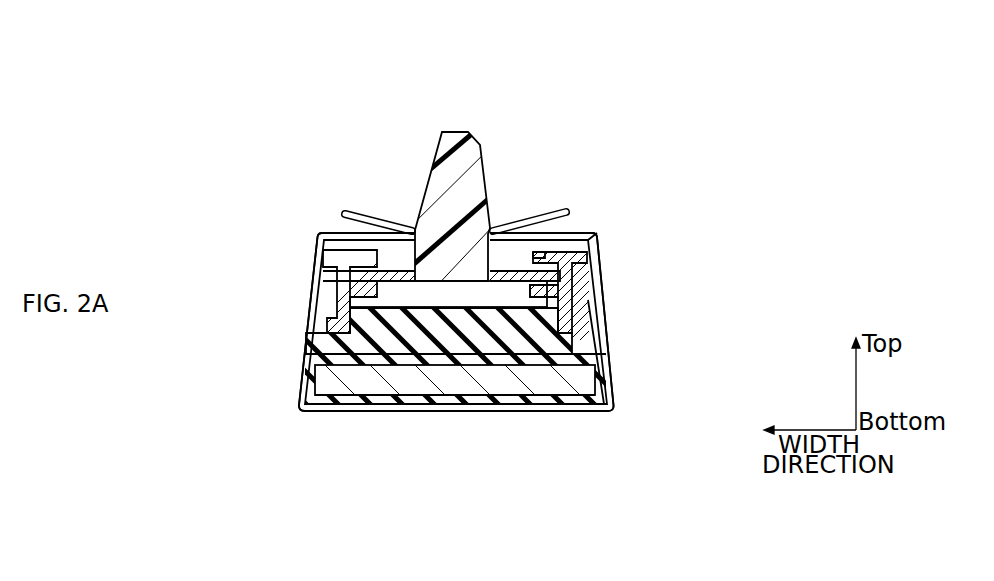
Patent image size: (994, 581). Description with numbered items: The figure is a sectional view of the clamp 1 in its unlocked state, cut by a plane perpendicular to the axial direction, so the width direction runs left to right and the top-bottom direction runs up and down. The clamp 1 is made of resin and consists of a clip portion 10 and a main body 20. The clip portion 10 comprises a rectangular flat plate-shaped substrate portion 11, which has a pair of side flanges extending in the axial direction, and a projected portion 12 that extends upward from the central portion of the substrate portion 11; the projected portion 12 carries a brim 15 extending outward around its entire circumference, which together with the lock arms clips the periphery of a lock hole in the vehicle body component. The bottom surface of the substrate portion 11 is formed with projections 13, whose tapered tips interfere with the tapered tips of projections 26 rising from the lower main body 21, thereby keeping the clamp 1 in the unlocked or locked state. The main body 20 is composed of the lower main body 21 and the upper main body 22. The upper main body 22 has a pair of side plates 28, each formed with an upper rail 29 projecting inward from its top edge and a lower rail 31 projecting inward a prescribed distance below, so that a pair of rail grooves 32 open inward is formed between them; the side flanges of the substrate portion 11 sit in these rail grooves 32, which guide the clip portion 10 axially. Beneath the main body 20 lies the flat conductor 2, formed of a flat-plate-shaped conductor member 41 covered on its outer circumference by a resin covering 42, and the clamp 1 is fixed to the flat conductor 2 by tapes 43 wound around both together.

The clamp 1 is at (504, 126).
The flat conductor 2 is at (433, 397).
The clip portion 10 is at (459, 112).
The substrate portion 11 is at (358, 268).
The projected portion 12 is at (437, 152).
The projections 13 is at (400, 298).
The brim 15 is at (343, 212).
The main body 20 is at (772, 200).
The lower main body 21 is at (588, 345).
The upper main body 22 is at (588, 270).
The projections 26 is at (437, 317).
The side plates 28 is at (370, 277).
The upper rail 29 is at (538, 262).
The lower rail 31 is at (552, 297).
The rail grooves 32 is at (558, 268).
The conductor member 41 is at (565, 468).
The resin covering 42 is at (535, 397).
The tapes 43 is at (603, 280).